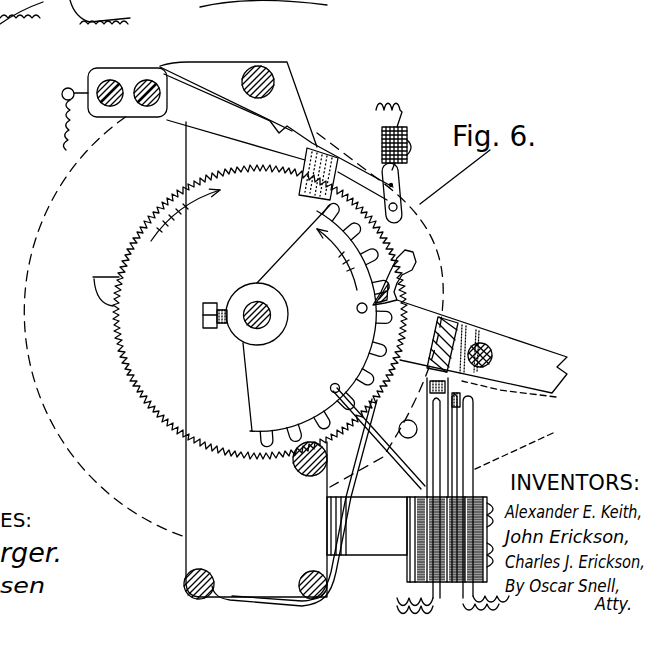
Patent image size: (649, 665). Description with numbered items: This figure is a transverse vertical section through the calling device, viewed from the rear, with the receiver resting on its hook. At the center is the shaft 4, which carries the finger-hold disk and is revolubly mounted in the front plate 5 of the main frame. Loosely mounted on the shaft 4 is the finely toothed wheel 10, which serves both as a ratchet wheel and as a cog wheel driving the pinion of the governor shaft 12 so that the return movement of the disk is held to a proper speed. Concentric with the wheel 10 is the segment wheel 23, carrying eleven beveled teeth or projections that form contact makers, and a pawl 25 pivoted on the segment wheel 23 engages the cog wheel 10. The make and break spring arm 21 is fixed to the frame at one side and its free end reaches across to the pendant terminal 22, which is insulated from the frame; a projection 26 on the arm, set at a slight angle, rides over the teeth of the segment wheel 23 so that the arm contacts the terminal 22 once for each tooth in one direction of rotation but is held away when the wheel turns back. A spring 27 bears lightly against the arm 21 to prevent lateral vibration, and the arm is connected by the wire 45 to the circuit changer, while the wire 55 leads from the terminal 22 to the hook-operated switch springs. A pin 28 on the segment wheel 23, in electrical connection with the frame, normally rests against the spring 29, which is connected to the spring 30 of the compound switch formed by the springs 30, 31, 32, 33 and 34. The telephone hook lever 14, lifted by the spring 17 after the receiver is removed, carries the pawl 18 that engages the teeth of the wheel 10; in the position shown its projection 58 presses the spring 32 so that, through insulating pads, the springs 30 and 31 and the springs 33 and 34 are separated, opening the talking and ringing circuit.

The shaft 4 is at (251, 304).
The front plate 5 is at (255, 360).
The wheel 10 is at (260, 312).
The shaft 12 is at (308, 476).
The telephone hook lever 14 is at (462, 337).
The spring 17 is at (339, 568).
The pawl 18 is at (100, 283).
The spring arm 21 is at (288, 142).
The pendant terminal 22 is at (401, 212).
The segment wheel 23 is at (317, 324).
The pawl 25 is at (413, 262).
The projection 26 is at (299, 193).
The spring 27 is at (207, 88).
The pin 28 is at (338, 384).
The spring 29 is at (403, 477).
The switch spring 30 is at (430, 430).
The switch spring 31 is at (438, 450).
The switch spring 32 is at (450, 420).
The switch spring 33 is at (460, 442).
The switch spring 34 is at (523, 443).
The wire 45 is at (60, 150).
The wire 55 is at (384, 102).
The projection 58 is at (529, 397).